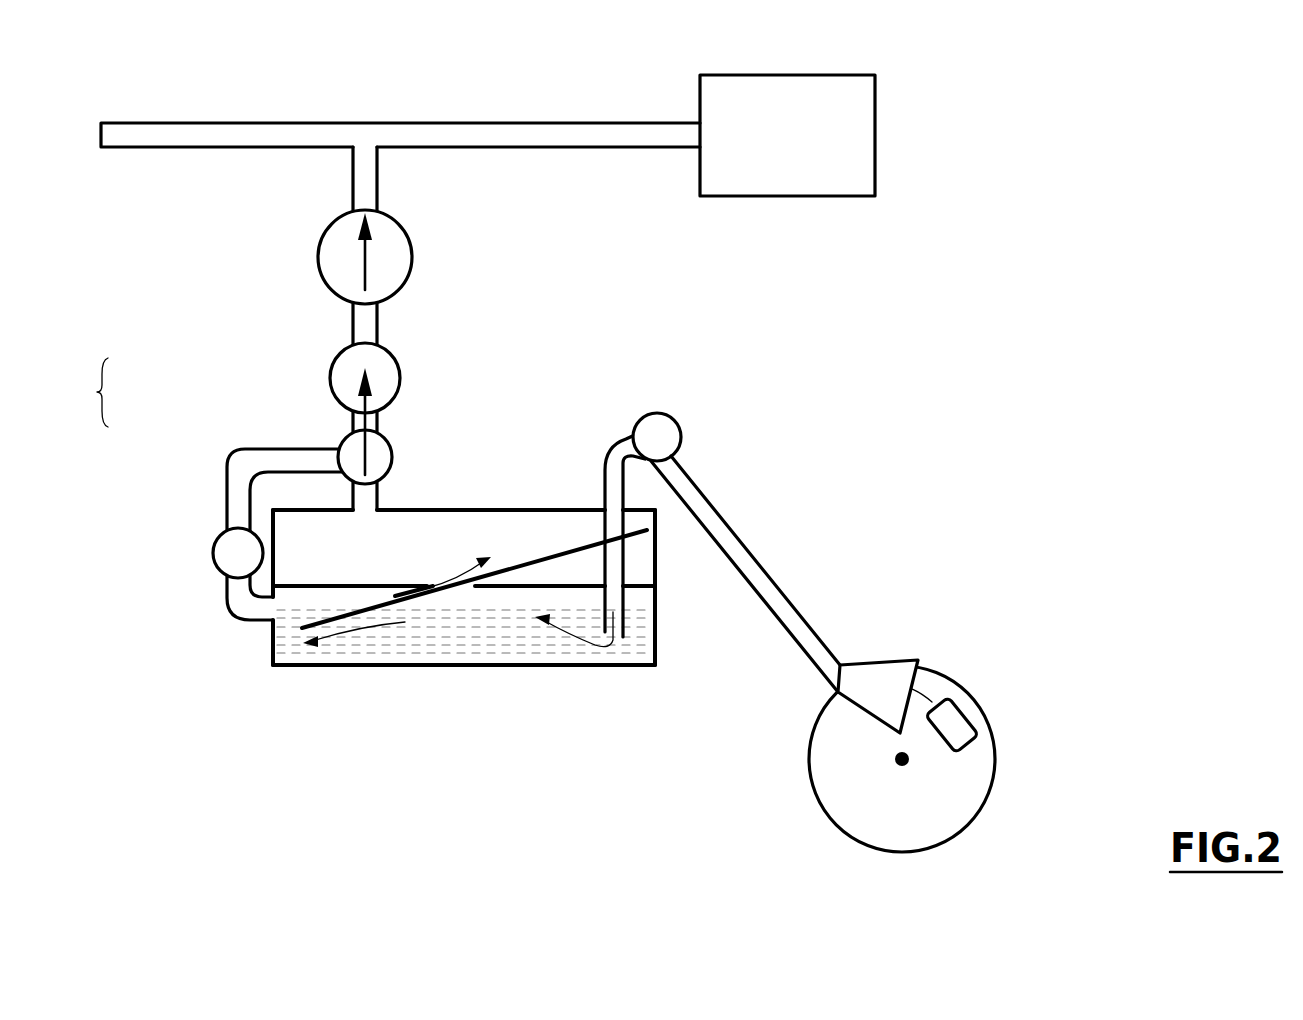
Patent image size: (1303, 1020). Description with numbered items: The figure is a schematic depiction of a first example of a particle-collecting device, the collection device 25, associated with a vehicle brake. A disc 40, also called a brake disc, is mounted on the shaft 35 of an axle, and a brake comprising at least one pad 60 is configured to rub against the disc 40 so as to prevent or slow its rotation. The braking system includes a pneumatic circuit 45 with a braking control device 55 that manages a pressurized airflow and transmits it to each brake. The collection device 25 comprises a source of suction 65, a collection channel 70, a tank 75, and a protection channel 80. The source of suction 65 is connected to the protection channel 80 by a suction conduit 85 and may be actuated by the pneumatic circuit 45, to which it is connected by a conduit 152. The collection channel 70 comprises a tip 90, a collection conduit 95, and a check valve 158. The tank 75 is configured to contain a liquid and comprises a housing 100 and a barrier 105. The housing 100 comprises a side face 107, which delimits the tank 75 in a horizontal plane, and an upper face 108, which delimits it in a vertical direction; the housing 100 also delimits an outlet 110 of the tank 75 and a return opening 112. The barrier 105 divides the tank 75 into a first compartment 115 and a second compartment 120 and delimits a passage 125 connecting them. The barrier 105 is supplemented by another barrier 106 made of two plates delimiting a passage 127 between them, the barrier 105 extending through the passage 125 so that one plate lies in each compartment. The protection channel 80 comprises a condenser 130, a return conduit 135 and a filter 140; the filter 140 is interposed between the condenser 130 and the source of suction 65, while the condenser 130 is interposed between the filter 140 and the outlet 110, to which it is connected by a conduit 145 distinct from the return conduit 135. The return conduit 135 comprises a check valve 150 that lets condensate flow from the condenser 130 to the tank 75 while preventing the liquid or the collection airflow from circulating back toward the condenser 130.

The collection device 25 is at (150, 690).
The shaft 35 is at (900, 768).
The disc 40 is at (978, 815).
The pneumatic circuit 45 is at (198, 132).
The braking control device 55 is at (787, 135).
The pad 60 is at (952, 727).
The source of suction 65 is at (323, 228).
The collection channel 70 is at (780, 544).
The tank 75 is at (398, 676).
The protection channel 80 is at (89, 392).
The suction conduit 85 is at (352, 320).
The tip 90 is at (893, 657).
The collection conduit 95 is at (695, 461).
The housing 100 is at (615, 667).
The barrier 105 is at (497, 580).
The barrier 106 is at (402, 586).
The side face 107 is at (657, 622).
The upper face 108 is at (487, 510).
The outlet 110 is at (365, 516).
The return opening 112 is at (278, 612).
The first compartment 115 is at (630, 567).
The second compartment 120 is at (522, 533).
The passage 125 is at (287, 640).
The passage 127 is at (465, 594).
The condenser 130 is at (347, 440).
The return conduit 135 is at (227, 497).
The filter 140 is at (333, 362).
The conduit 145 is at (423, 522).
The check valve 150 is at (213, 551).
The conduit 152 is at (377, 172).
The check valve 158 is at (658, 428).